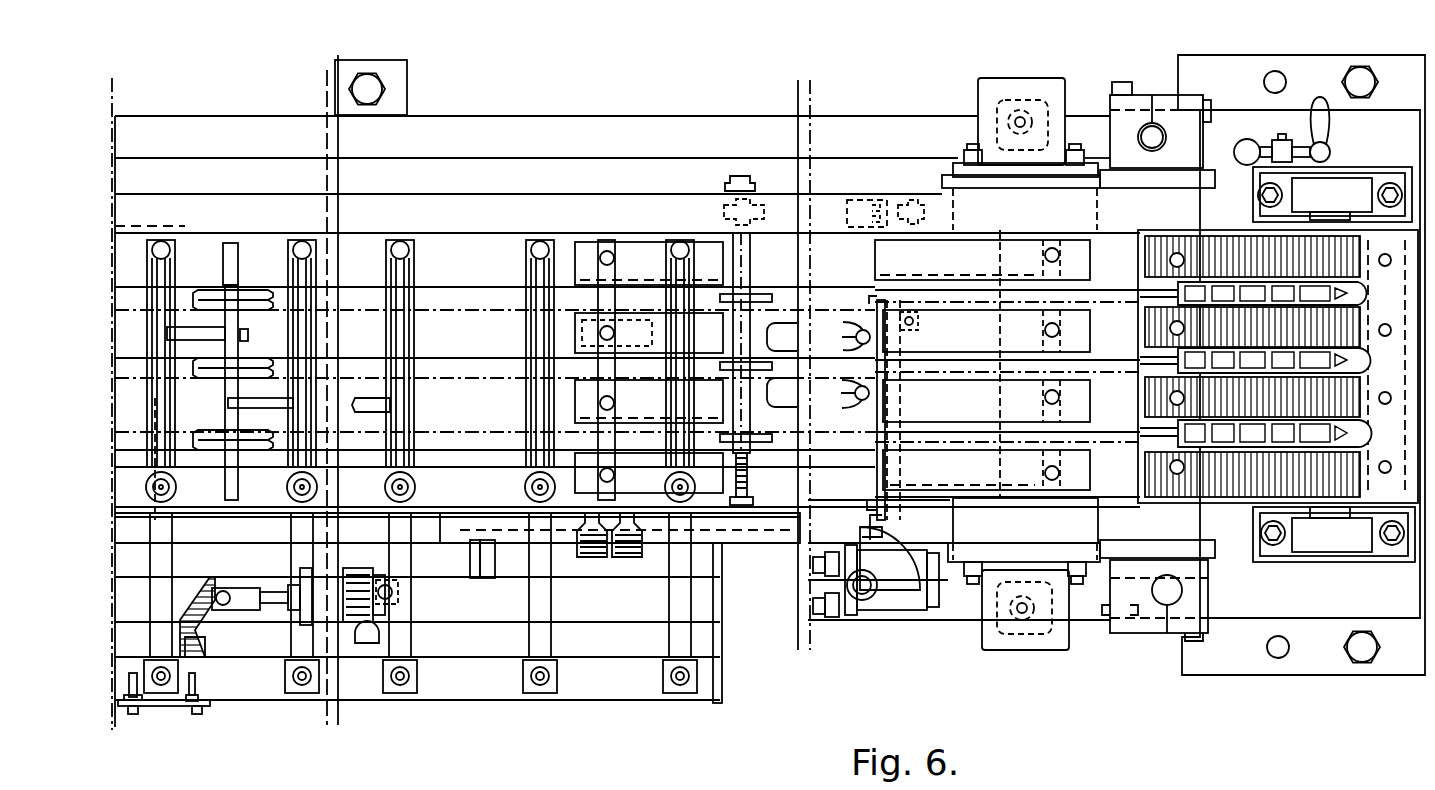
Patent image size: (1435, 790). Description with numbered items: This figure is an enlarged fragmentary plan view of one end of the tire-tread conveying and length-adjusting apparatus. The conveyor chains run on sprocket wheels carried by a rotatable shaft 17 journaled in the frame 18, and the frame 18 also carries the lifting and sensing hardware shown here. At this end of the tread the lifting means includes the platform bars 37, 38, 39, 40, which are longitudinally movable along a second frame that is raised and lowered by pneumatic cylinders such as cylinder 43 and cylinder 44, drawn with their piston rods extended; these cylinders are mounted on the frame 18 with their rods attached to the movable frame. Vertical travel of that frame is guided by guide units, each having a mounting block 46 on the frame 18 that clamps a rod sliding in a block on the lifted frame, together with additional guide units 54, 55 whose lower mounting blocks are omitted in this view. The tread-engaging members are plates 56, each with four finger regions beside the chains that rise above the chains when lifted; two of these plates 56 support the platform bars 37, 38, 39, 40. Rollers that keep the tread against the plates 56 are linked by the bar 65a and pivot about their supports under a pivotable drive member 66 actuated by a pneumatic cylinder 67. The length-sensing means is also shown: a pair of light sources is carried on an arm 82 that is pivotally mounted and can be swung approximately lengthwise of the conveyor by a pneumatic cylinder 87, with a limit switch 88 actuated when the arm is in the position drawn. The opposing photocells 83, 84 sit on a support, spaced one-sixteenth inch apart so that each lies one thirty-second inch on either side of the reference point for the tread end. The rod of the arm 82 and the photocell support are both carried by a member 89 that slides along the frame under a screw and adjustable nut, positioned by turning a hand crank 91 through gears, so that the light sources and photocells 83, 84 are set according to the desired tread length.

The rotatable shaft 17 is at (1278, 366).
The frame 18 is at (900, 198).
The platform bar 37 is at (924, 280).
The platform bar 38 is at (958, 350).
The platform bar 39 is at (964, 423).
The platform bar 40 is at (954, 496).
The pneumatic cylinder 43 is at (1017, 84).
The pneumatic cylinder 44 is at (1012, 650).
The mounting block 46 is at (1141, 637).
The guide unit 54 is at (1160, 95).
The guide unit 55 is at (1108, 126).
The plate 56 is at (1093, 326).
The bar 65a is at (444, 514).
The pivotable drive member 66 is at (200, 630).
The pneumatic cylinder 67 is at (355, 570).
The arm 82 is at (875, 305).
The photocell 83 is at (854, 394).
The photocell 84 is at (852, 338).
The pneumatic cylinder 87 is at (887, 424).
The limit switch 88 is at (913, 614).
The member 89 is at (846, 200).
The hand crank 91 is at (1250, 142).